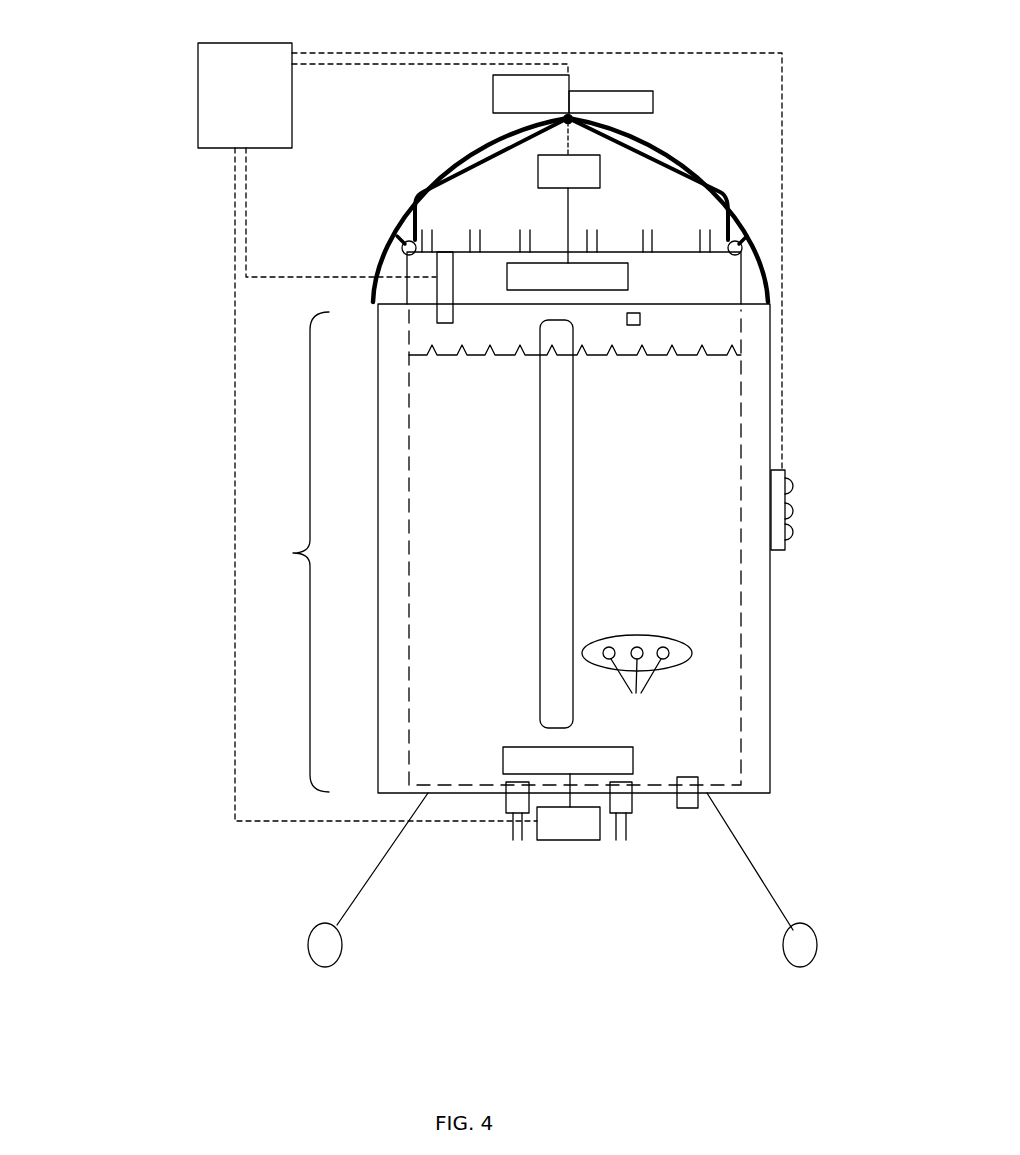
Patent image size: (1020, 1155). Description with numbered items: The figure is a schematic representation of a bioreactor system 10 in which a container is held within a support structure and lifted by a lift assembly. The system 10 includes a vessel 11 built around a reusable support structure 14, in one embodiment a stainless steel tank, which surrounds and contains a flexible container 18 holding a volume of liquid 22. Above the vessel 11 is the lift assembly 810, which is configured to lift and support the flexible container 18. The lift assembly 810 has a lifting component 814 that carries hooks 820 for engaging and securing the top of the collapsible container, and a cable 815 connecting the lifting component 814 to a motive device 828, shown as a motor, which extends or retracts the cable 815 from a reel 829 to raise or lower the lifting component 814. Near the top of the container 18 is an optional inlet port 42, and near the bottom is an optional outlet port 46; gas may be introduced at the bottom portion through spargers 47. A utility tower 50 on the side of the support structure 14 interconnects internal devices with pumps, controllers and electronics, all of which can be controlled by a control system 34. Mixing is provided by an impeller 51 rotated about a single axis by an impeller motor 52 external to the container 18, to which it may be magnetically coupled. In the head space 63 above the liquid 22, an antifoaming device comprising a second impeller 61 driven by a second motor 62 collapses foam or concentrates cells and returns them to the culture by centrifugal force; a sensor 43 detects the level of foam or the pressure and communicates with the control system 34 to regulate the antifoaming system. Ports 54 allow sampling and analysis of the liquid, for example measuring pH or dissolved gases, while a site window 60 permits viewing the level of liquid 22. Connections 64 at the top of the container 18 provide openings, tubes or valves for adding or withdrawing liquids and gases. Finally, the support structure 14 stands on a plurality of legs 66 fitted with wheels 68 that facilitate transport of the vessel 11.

The bioreactor system 10 is at (136, 492).
The vessel 11 is at (295, 552).
The reusable support structure 14 is at (771, 369).
The container 18 is at (741, 431).
The liquid 22 is at (443, 357).
The control system 34 is at (275, 120).
The inlet port 42 is at (640, 318).
The sensor 43 is at (432, 320).
The outlet port 46 is at (687, 803).
The spargers 47 is at (512, 828).
The utility tower 50 is at (785, 548).
The impeller 51 is at (627, 764).
The impeller motor 52 is at (562, 836).
The ports 54 is at (637, 681).
The site window 60 is at (555, 458).
The second impeller 61 is at (618, 273).
The second motor 62 is at (590, 173).
The head space 63 is at (518, 295).
The connections 64 is at (475, 250).
The legs 66 is at (367, 888).
The wheels 68 is at (330, 948).
The lift assembly 810 is at (400, 131).
The lifting component 814 is at (497, 155).
The cable 815 is at (574, 121).
The hook 820 is at (398, 248).
The motive device 828 is at (545, 90).
The reel 829 is at (612, 100).